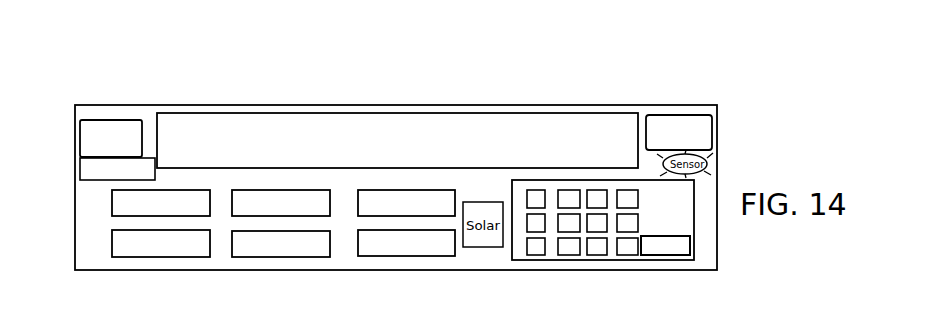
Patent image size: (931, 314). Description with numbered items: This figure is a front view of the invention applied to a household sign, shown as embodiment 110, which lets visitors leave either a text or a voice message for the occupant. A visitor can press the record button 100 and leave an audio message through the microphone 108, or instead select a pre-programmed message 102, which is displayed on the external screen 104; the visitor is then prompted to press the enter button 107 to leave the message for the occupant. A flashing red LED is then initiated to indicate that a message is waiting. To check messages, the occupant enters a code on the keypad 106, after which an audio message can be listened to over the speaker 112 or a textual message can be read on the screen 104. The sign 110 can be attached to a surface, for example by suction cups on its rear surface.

The record button 100 is at (85, 184).
The pre-programmed message 102 is at (387, 257).
The external screen 104 is at (582, 125).
The keypad 106 is at (528, 257).
The enter button 107 is at (682, 256).
The microphone 108 is at (80, 138).
The sign 110 is at (138, 96).
The speaker 112 is at (705, 131).